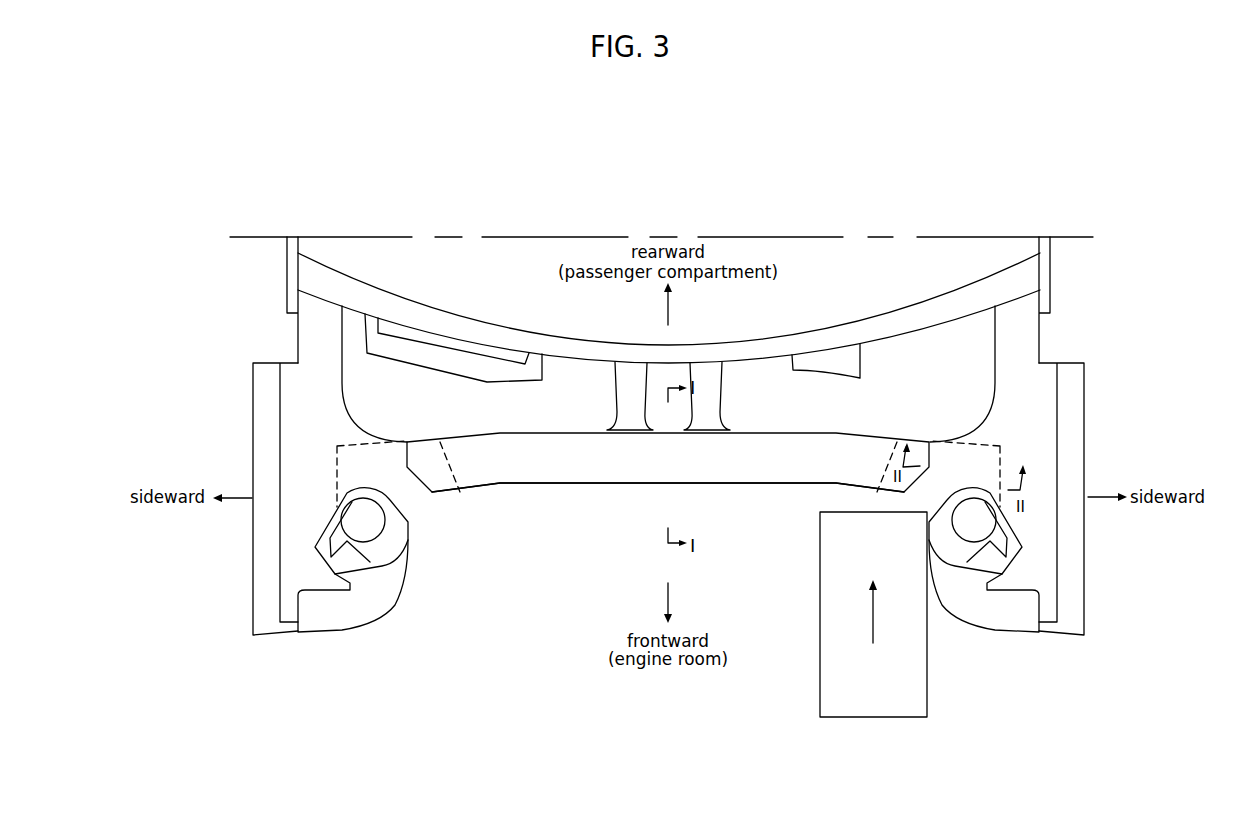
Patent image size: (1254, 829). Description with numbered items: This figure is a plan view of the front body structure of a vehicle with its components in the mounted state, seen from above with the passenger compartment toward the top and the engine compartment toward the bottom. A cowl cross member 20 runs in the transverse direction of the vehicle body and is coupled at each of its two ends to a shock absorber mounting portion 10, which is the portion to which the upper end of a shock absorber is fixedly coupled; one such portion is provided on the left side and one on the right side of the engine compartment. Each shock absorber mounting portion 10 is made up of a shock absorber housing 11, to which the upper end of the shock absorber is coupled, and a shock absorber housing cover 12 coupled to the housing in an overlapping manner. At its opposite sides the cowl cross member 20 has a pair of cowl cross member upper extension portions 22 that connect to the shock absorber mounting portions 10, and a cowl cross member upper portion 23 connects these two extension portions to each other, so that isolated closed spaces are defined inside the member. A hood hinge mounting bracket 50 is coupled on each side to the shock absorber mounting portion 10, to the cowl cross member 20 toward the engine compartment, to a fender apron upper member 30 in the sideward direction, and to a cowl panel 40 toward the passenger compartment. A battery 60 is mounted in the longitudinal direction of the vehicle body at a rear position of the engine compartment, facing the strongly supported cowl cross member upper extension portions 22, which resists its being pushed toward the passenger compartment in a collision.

The shock absorber mounting portion 10 is at (672, 614).
The shock absorber housing 11 is at (1033, 677).
The shock absorber housing cover 12 is at (948, 677).
The cowl cross member 20 is at (670, 493).
The cowl cross member upper extension portion 22 is at (1002, 456).
The cowl cross member upper portion 23 is at (520, 472).
The fender apron upper member 30 is at (1070, 577).
The cowl panel 40 is at (885, 358).
The hood hinge mounting bracket 50 is at (1035, 398).
The battery 60 is at (873, 717).